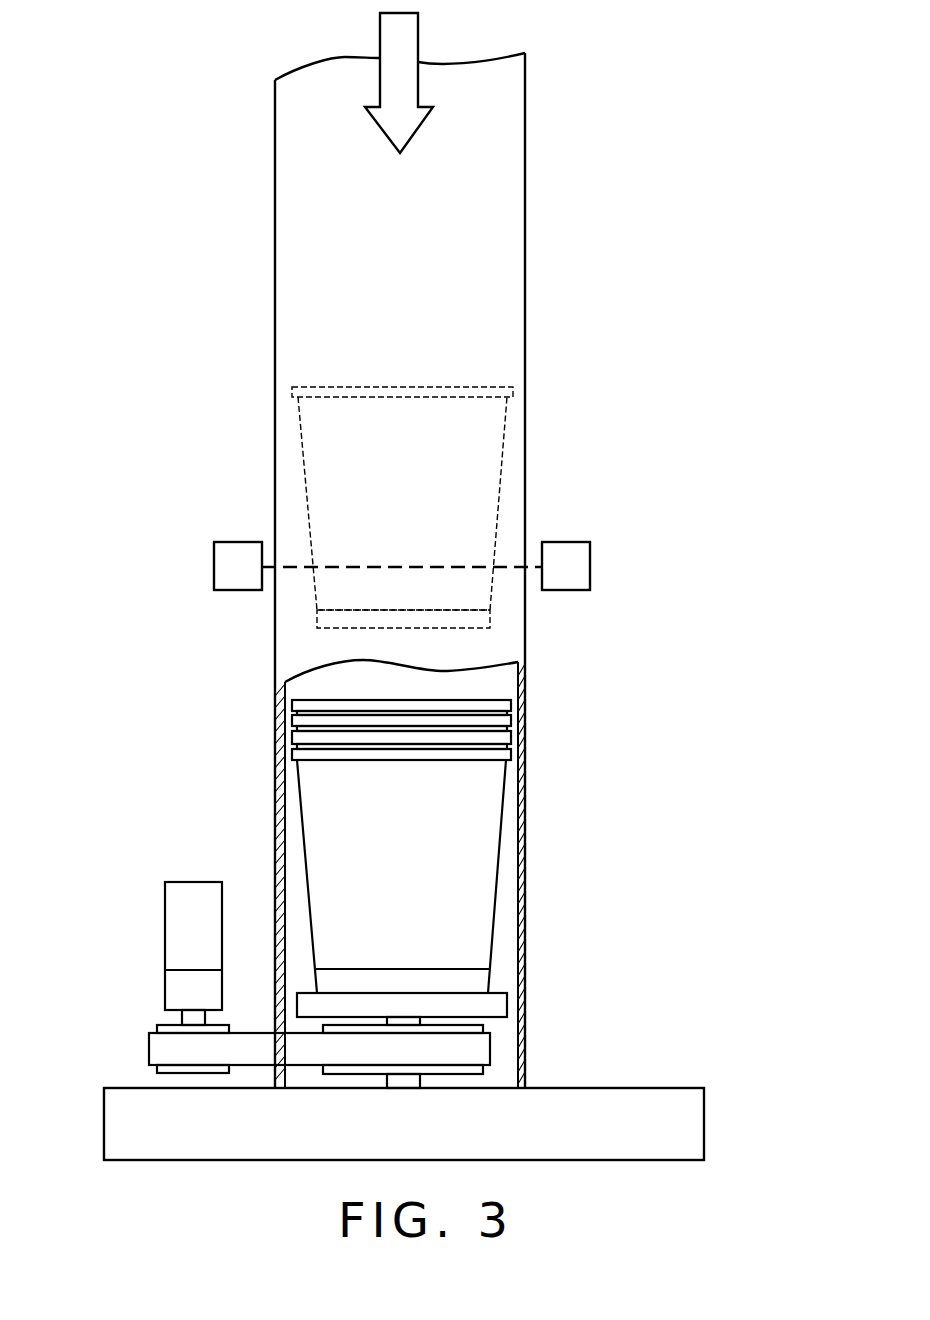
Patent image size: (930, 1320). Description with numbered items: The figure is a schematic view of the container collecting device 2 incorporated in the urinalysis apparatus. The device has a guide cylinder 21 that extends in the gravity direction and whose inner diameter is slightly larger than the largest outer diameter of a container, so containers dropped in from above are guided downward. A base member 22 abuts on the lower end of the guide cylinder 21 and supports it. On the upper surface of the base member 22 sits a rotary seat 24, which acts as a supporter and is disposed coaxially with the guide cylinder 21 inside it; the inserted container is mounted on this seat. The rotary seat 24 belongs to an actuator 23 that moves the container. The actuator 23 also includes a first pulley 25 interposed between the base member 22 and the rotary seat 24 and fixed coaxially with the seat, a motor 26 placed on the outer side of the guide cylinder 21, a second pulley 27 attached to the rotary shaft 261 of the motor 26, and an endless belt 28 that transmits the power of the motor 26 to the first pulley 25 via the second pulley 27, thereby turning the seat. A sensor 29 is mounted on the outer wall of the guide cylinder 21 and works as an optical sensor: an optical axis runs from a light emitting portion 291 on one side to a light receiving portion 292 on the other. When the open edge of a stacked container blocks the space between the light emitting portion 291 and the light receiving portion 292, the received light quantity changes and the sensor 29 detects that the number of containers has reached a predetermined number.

The container collecting device 2 is at (525, 125).
The guide cylinder 21 is at (275, 190).
The base member 22 is at (104, 1137).
The actuator 23 is at (165, 985).
The rotary seat 24 is at (500, 993).
The first pulley 25 is at (470, 1068).
The motor 26 is at (190, 882).
The rotary shaft 261 is at (190, 1018).
The second pulley 27 is at (180, 1070).
The endless belt 28 is at (149, 1045).
The sensor 29 is at (220, 542).
The light emitting portion 291 is at (225, 575).
The light receiving portion 292 is at (580, 575).